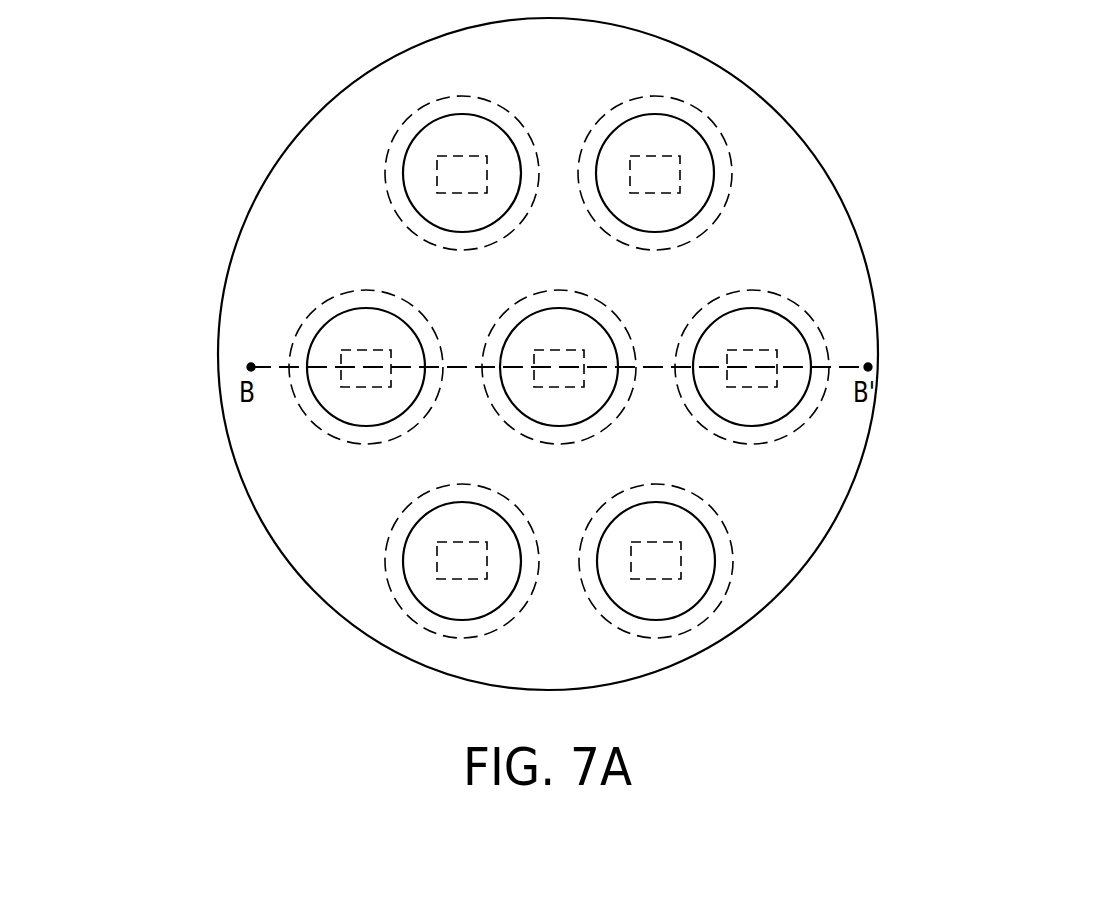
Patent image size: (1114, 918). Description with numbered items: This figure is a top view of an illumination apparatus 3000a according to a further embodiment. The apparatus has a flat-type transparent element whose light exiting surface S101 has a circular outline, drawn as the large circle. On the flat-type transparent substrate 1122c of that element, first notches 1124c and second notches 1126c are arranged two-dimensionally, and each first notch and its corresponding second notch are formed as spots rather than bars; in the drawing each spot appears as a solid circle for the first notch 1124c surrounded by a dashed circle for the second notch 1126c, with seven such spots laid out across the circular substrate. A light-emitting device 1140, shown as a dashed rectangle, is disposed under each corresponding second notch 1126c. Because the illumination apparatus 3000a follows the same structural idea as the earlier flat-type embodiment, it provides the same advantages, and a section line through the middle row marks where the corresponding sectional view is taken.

The flat-type transparent substrate 1122c is at (832, 238).
The light exiting surface S101 is at (772, 190).
The illumination apparatus 3000a is at (905, 528).
The second notches 1126c is at (367, 295).
The first notches 1124c is at (352, 333).
The light-emitting devices 1140 is at (367, 390).